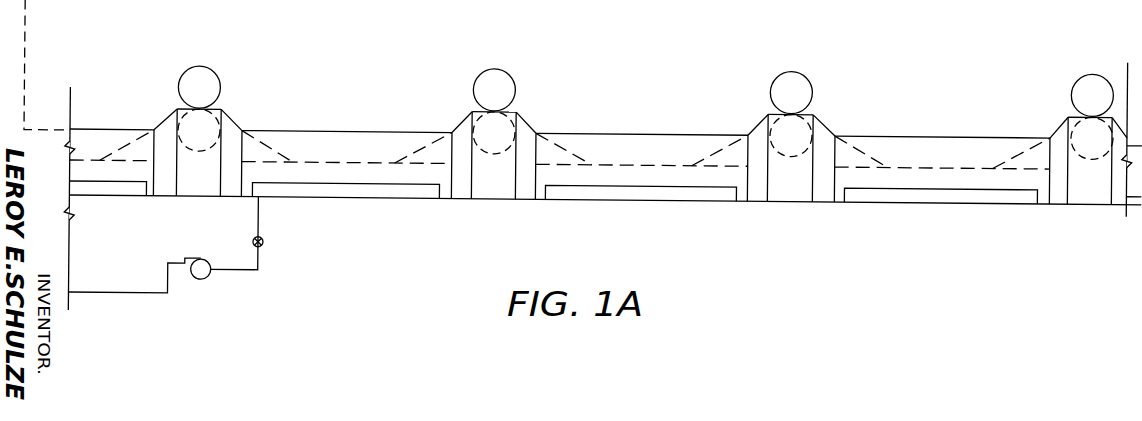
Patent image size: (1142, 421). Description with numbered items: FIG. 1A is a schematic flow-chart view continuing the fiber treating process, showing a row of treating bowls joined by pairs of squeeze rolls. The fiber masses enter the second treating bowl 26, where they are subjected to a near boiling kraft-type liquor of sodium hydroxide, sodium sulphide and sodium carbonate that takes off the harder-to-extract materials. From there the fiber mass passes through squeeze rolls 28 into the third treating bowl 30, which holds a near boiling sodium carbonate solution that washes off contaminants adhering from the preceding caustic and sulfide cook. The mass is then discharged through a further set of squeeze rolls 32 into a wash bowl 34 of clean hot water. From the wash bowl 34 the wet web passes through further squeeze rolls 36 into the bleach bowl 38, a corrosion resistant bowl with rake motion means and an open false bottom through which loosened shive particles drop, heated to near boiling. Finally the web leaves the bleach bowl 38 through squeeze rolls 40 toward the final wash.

The second treating bowl 26 is at (108, 129).
The squeeze rolls 28 is at (201, 66).
The third treating bowl 30 is at (348, 129).
The squeeze rolls 32 is at (495, 65).
The wash bowl 34 is at (642, 129).
The squeeze rolls 36 is at (793, 65).
The bleach bowl 38 is at (930, 129).
The squeeze rolls 40 is at (1093, 65).